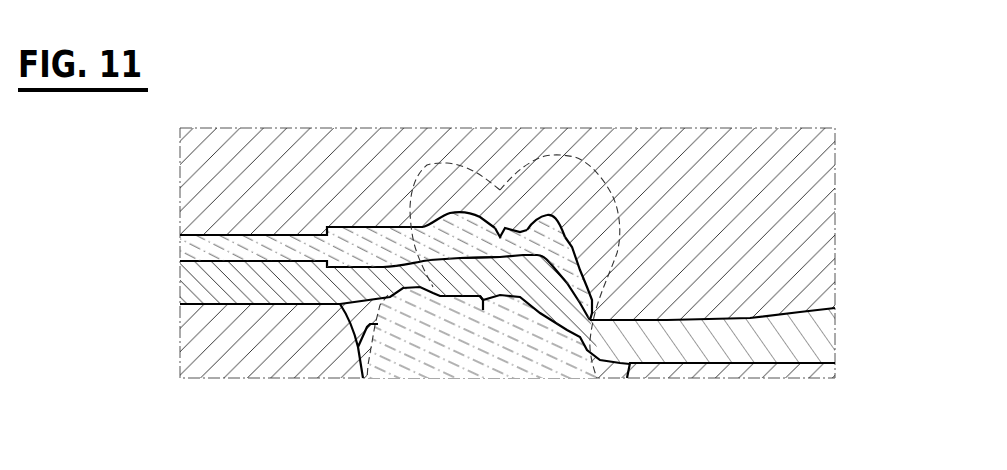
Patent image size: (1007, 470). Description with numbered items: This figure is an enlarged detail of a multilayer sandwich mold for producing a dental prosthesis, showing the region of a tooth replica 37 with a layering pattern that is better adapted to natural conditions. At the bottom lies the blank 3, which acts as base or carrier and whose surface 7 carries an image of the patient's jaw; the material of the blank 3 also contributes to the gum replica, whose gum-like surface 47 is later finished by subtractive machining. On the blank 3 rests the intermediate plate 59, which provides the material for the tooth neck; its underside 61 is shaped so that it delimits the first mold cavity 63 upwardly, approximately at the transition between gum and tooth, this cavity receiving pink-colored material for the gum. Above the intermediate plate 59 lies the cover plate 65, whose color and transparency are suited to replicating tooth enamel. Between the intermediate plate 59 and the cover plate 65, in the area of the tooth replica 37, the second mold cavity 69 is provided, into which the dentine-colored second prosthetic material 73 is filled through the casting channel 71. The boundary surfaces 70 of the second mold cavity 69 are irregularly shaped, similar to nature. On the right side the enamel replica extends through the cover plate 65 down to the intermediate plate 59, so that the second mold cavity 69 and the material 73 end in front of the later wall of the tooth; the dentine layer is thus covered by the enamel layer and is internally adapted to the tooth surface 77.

The blank 3 is at (228, 346).
The surface 7 is at (291, 303).
The tooth replica 37 is at (455, 182).
The surface of the prosthesis 47 is at (358, 347).
The intermediate plate 59 is at (810, 333).
The underside of intermediate plate 61 is at (483, 307).
The first mold cavity 63 is at (398, 352).
The cover plate 65 is at (790, 203).
The second mold cavity 69 is at (483, 242).
The boundary surfaces 70 is at (523, 230).
The casting channel 71 is at (190, 248).
The second prosthetic material 73 is at (383, 245).
The tooth surface 77 is at (575, 157).